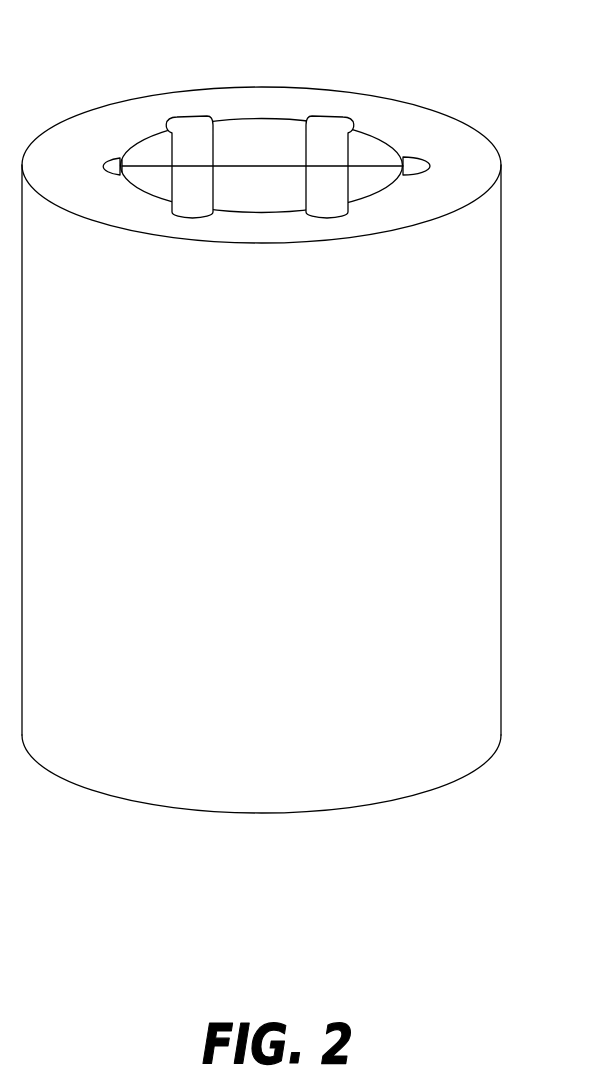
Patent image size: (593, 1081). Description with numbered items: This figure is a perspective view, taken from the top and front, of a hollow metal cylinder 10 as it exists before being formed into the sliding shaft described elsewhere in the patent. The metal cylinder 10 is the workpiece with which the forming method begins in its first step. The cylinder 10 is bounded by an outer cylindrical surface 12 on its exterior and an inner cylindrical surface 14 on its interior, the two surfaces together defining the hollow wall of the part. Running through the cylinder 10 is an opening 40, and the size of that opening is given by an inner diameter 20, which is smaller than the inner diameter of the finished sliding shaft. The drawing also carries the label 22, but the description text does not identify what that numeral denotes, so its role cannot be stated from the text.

The metal cylinder 10 is at (287, 412).
The outer cylindrical surface 12 is at (502, 203).
The inner cylindrical surface 14 is at (185, 121).
The inner diameter 20 is at (366, 166).
The support boss 22 is at (110, 166).
The opening 40 is at (264, 181).